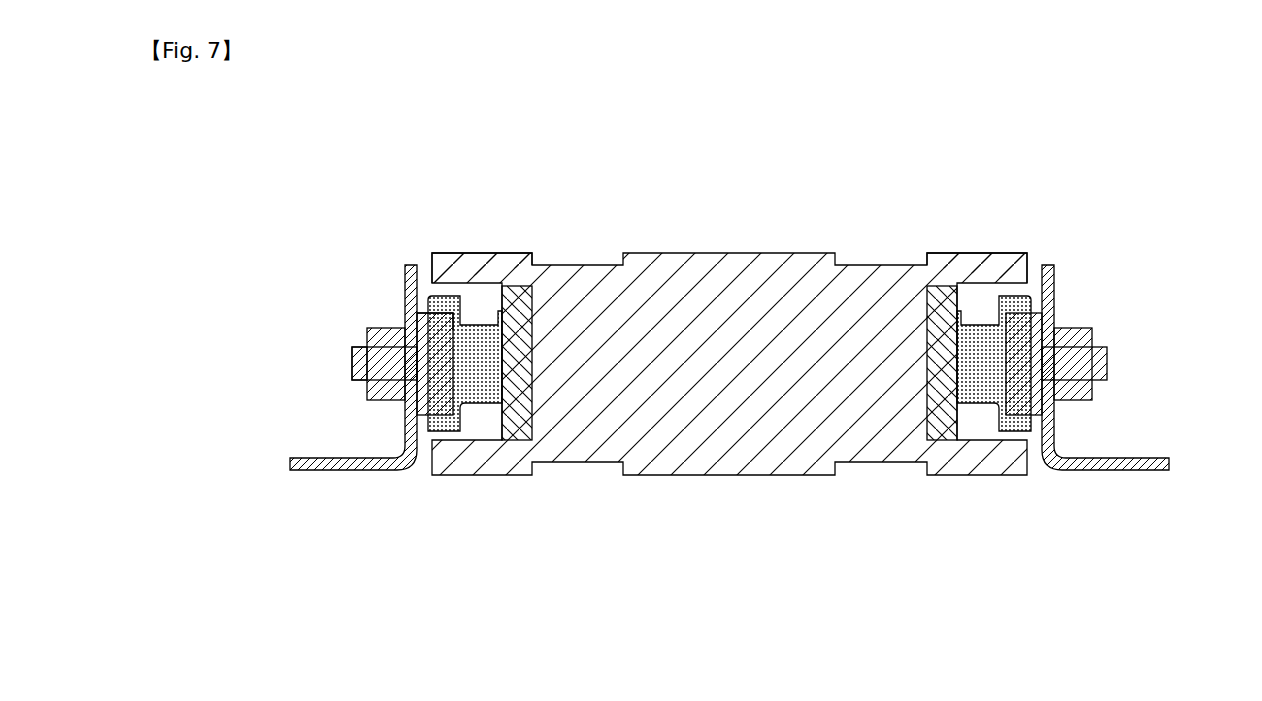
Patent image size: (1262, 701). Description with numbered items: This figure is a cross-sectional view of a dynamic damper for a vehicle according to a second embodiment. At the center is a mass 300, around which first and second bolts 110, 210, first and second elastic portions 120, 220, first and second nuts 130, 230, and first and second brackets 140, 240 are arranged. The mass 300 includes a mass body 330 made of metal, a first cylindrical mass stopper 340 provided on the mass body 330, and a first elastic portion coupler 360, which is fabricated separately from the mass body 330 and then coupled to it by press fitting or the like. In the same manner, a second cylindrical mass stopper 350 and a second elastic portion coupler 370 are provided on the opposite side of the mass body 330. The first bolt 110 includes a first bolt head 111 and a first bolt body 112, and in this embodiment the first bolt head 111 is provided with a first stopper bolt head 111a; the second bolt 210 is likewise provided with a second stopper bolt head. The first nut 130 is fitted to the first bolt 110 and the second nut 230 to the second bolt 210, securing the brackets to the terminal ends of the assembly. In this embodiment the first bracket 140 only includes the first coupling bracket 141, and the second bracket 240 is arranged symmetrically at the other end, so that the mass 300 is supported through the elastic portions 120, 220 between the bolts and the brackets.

The first bolt 110 is at (365, 272).
The first bolt head 111 is at (408, 272).
The first stopper bolt head 111a is at (437, 322).
The first bolt body 112 is at (308, 299).
The first elastic portion 120 is at (477, 380).
The first nut 130 is at (373, 390).
The first bracket 140 is at (343, 436).
The first coupling bracket 141 is at (343, 483).
The second bolt 210 is at (1033, 320).
The second elastic portion 220 is at (985, 388).
The second nut 230 is at (1093, 385).
The second bracket 240 is at (1120, 483).
The mass 300 is at (729, 352).
The mass body 330 is at (722, 392).
The first cylindrical mass stopper 340 is at (485, 276).
The second cylindrical mass stopper 350 is at (976, 270).
The first elastic portion coupler 360 is at (517, 373).
The second elastic portion coupler 370 is at (925, 386).